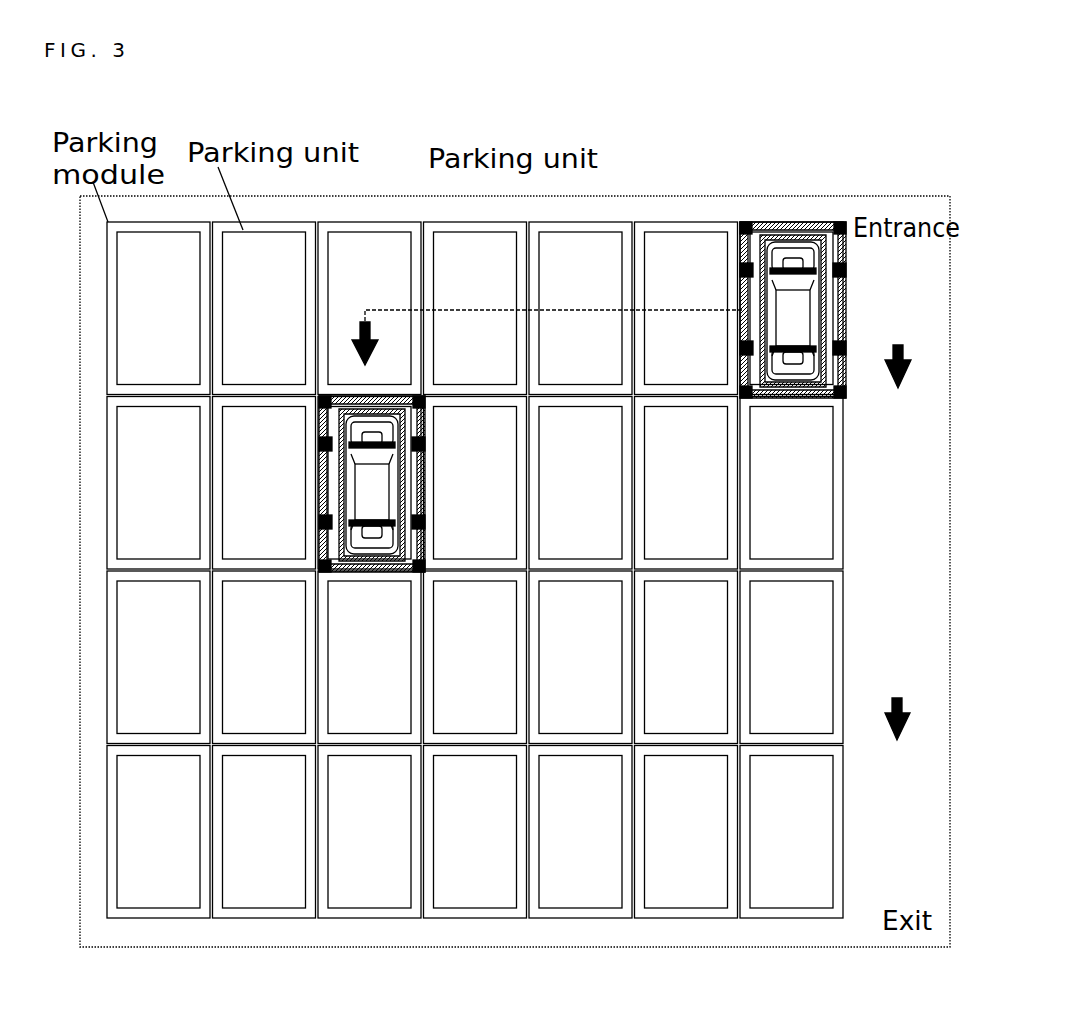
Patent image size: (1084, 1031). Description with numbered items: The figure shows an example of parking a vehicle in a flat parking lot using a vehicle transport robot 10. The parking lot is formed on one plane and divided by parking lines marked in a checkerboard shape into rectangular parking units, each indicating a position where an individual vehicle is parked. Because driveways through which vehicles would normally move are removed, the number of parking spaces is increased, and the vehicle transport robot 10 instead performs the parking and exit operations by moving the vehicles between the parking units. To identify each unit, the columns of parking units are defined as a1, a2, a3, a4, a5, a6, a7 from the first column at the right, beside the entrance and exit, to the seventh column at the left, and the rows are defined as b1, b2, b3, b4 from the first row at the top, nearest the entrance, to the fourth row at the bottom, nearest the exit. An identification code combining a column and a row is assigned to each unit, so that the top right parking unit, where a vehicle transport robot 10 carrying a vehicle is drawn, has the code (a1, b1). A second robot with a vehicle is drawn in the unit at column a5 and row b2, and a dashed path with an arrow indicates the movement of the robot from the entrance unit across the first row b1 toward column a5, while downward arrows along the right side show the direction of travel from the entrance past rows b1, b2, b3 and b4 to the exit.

The vehicle transport robot 10 is at (846, 224).
The first column of parking units a1 is at (791, 298).
The second column of parking units a2 is at (686, 298).
The third column of parking units a3 is at (580, 298).
The fourth column of parking units a4 is at (475, 298).
The fifth column of parking units a5 is at (369, 298).
The sixth column of parking units a6 is at (264, 298).
The seventh column of parking units a7 is at (158, 298).
The first row of parking units b1 is at (805, 308).
The second row of parking units b2 is at (805, 483).
The third row of parking units b3 is at (805, 657).
The fourth row of parking units b4 is at (805, 832).